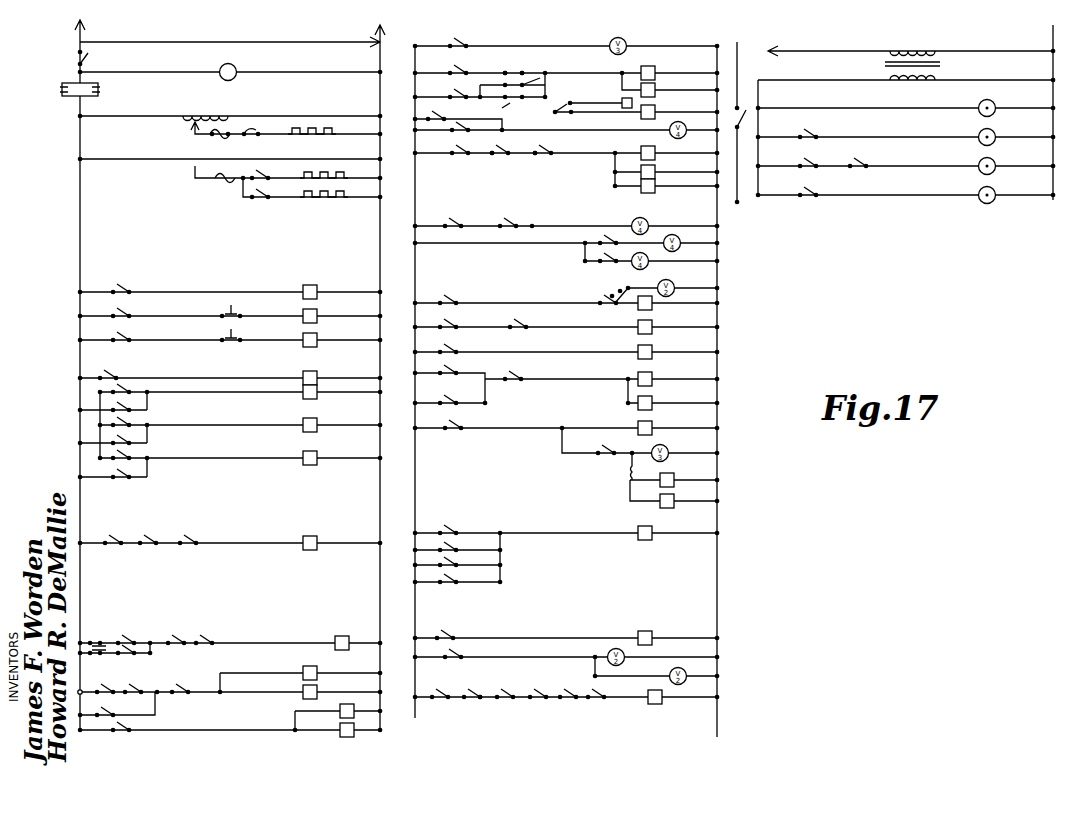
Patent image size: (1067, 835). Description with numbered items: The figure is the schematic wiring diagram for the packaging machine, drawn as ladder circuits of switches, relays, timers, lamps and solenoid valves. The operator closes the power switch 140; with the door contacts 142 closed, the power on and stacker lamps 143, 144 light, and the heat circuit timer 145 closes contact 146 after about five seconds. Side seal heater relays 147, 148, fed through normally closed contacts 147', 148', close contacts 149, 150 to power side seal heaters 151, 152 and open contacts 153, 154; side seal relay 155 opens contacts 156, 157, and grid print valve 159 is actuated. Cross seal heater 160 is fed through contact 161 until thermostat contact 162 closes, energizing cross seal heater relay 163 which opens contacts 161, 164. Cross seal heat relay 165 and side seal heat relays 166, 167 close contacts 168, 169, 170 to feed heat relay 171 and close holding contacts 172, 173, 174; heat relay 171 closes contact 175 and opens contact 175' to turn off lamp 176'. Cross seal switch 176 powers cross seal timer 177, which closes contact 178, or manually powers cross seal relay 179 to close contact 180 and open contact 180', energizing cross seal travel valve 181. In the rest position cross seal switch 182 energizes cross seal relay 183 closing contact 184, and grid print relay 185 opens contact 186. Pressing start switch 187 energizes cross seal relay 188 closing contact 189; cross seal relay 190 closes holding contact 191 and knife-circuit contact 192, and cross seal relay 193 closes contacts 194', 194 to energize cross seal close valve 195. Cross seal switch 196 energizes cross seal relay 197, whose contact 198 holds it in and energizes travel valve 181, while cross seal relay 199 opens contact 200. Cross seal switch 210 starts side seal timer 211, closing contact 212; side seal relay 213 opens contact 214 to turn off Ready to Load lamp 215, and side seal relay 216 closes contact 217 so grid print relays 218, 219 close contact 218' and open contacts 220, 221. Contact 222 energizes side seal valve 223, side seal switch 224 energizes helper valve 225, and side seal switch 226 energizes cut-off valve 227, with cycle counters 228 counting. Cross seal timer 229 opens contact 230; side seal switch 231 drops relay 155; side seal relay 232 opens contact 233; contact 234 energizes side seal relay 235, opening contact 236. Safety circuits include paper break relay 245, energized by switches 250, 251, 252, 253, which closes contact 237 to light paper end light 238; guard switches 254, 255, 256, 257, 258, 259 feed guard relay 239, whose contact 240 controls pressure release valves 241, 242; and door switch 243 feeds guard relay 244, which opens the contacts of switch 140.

The power switch 140 is at (93, 64).
The contacts 142 is at (56, 90).
The power on lamp 143 is at (984, 102).
The stacker lamp 144 is at (234, 70).
The heat circuit timer 145 is at (329, 376).
The contact 146 is at (97, 388).
The side seal heater relay 147 is at (298, 308).
The normally closed contact 147' is at (146, 304).
The side seal heater relay 148 is at (298, 332).
The normally closed contact 148' is at (146, 328).
The contact 149 is at (256, 176).
The contact 150 is at (250, 195).
The side seal heater 151 is at (334, 174).
The side seal heater 152 is at (315, 199).
The normally closed contact 153 is at (134, 420).
The normally closed contact 154 is at (134, 455).
The side seal relay 155 is at (650, 350).
The normally closed contact 156 is at (513, 73).
The normally closed contact 157 is at (514, 325).
The grid print valve 159 is at (681, 243).
The cross seal heater 160 is at (306, 128).
The normally closed contact 161 is at (246, 131).
The thermostat contact 162 is at (124, 292).
The cross seal heater relay 163 is at (312, 286).
The contact 164 is at (126, 386).
The cross seal heat relay 165 is at (318, 399).
The side seal heat relay 166 is at (315, 429).
The side seal heat relay 167 is at (314, 456).
The contact 168 is at (110, 540).
The contact 169 is at (144, 540).
The contact 170 is at (178, 540).
The heat relay 171 is at (308, 536).
The contact 172 is at (134, 404).
The contact 173 is at (134, 439).
The contact 174 is at (123, 482).
The contact 175 is at (174, 628).
The contact 175' is at (827, 184).
The cross seal switch 176 is at (567, 94).
The lamp 176' is at (1007, 188).
The cross seal timer 177 is at (622, 100).
The contact 178 is at (504, 158).
The cross seal relay 179 is at (649, 112).
The contact 180 is at (437, 108).
The contact 180' is at (547, 161).
The cross seal travel valve 181 is at (684, 132).
The cross seal switch 182 is at (112, 736).
The cross seal relay 183 is at (345, 737).
The contact 184 is at (124, 690).
The grid print relay 185 is at (342, 714).
The contact 186 is at (520, 377).
The start switch 187 is at (126, 640).
The cross seal relay 188 is at (352, 636).
The contact 189 is at (104, 690).
The cross seal relay 190 is at (304, 698).
The contact 191 is at (106, 714).
The contact 192 is at (608, 449).
The cross seal relay 193 is at (306, 672).
The contact 194 is at (445, 33).
The contact 194' is at (552, 67).
The cross seal close valve 195 is at (620, 39).
The cross seal switch 196 is at (460, 68).
The cross seal relay 197 is at (657, 73).
The contact 198 is at (460, 92).
The cross seal relay 199 is at (657, 90).
The contact 200 is at (808, 161).
The cross seal switch 210 is at (461, 158).
The side seal timer 211 is at (655, 190).
The contact 212 is at (448, 297).
The side seal relay 213 is at (653, 172).
The contact 214 is at (858, 166).
The Ready to Load lamp 215 is at (980, 159).
The side seal relay 216 is at (642, 151).
The contact 217 is at (454, 372).
The grid print relay 218 is at (664, 371).
The contact 218' is at (436, 391).
The grid print relay 219 is at (649, 399).
The contact 220 is at (610, 242).
The contact 221 is at (604, 264).
The contact 222 is at (511, 223).
The side seal valve 223 is at (648, 224).
The side seal switch 224 is at (608, 306).
The side seal helper valve 225 is at (674, 284).
The side seal switch 226 is at (458, 425).
The cut-off valve 227 is at (670, 449).
The cycle counters 228 is at (676, 478).
The cross seal timer 229 is at (649, 424).
The contact 230 is at (176, 690).
The side seal switch 231 is at (454, 351).
The side seal relay 232 is at (653, 307).
The contact 233 is at (464, 208).
The contact 234 is at (452, 324).
The side seal relay 235 is at (638, 332).
The contact 236 is at (510, 107).
The contact 237 is at (808, 132).
The paper end light 238 is at (992, 131).
The guard relay 239 is at (655, 706).
The contact 240 is at (458, 660).
The pressure release valve 241 is at (609, 654).
The pressure release valve 242 is at (671, 672).
The switch 243 is at (452, 636).
The guard relay 244 is at (645, 630).
The paper break relay 245 is at (649, 532).
The switch 250 is at (448, 530).
The switch 251 is at (462, 542).
The switch 252 is at (462, 559).
The switch 253 is at (456, 584).
The switch 254 is at (440, 694).
The switch 255 is at (474, 698).
The switch 256 is at (504, 684).
The switch 257 is at (538, 700).
The switch 258 is at (562, 688).
The switch 259 is at (594, 702).